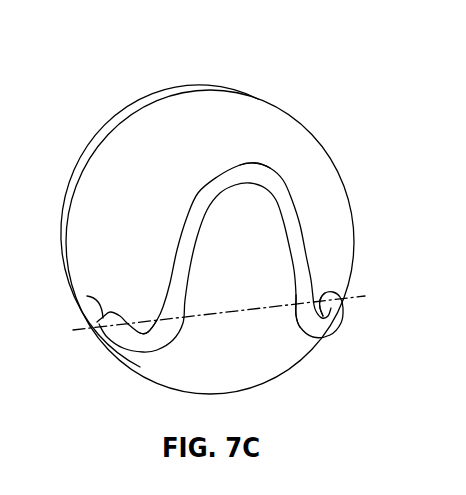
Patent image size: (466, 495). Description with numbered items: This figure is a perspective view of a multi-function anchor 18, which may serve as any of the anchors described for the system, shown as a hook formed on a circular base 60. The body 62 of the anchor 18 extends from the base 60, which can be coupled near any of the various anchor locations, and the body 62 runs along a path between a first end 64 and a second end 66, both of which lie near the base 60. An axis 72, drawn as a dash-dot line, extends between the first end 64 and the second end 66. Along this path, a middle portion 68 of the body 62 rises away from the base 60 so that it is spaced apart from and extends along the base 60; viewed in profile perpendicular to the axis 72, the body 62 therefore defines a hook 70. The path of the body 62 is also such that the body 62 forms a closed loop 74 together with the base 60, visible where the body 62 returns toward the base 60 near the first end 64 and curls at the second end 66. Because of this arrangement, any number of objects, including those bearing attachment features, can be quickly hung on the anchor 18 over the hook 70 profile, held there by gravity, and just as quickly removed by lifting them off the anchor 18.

The anchor 18 is at (270, 62).
The base 60 is at (173, 122).
The body 62 is at (303, 313).
The first end 64 is at (87, 296).
The second end 66 is at (330, 292).
The middle portion 68 is at (242, 173).
The hook 70 is at (345, 210).
The axis 72 is at (223, 313).
The closed loop 74 is at (145, 302).